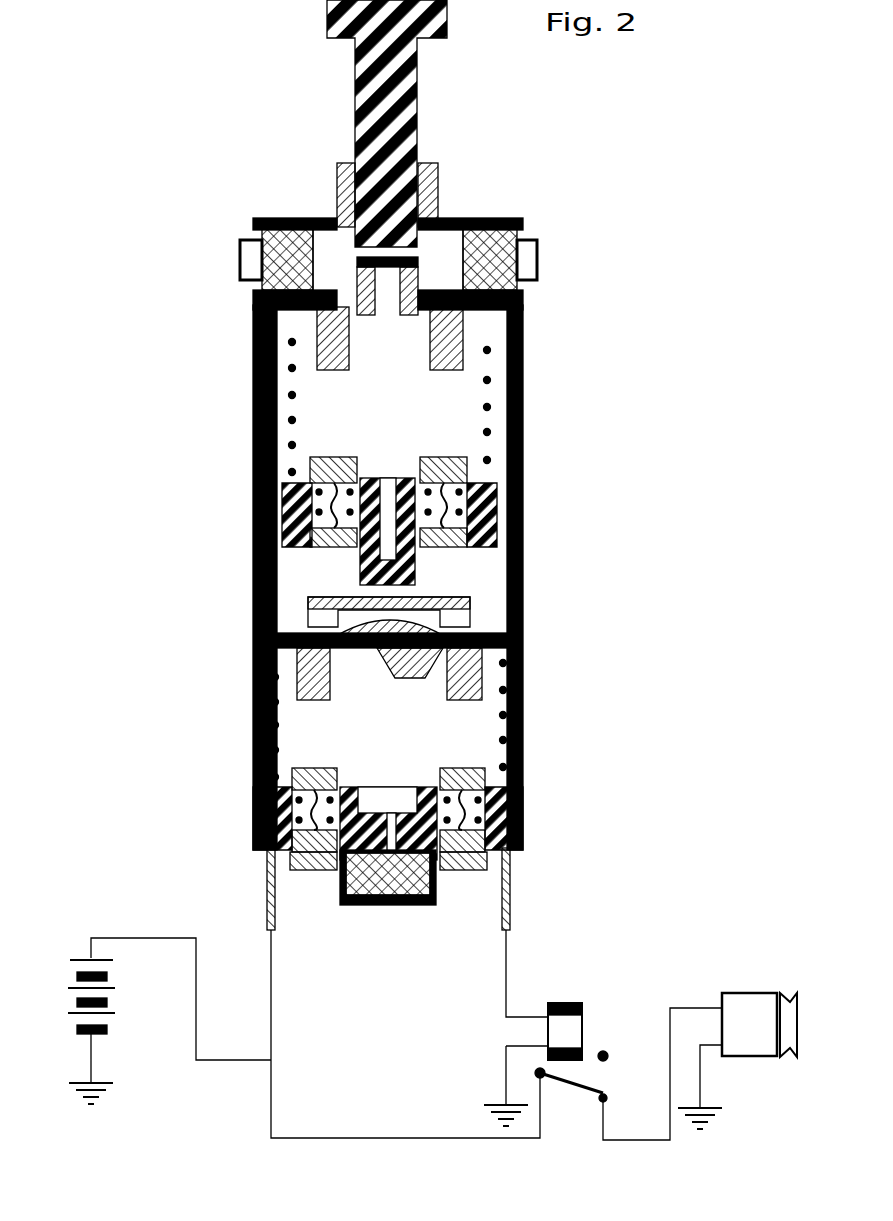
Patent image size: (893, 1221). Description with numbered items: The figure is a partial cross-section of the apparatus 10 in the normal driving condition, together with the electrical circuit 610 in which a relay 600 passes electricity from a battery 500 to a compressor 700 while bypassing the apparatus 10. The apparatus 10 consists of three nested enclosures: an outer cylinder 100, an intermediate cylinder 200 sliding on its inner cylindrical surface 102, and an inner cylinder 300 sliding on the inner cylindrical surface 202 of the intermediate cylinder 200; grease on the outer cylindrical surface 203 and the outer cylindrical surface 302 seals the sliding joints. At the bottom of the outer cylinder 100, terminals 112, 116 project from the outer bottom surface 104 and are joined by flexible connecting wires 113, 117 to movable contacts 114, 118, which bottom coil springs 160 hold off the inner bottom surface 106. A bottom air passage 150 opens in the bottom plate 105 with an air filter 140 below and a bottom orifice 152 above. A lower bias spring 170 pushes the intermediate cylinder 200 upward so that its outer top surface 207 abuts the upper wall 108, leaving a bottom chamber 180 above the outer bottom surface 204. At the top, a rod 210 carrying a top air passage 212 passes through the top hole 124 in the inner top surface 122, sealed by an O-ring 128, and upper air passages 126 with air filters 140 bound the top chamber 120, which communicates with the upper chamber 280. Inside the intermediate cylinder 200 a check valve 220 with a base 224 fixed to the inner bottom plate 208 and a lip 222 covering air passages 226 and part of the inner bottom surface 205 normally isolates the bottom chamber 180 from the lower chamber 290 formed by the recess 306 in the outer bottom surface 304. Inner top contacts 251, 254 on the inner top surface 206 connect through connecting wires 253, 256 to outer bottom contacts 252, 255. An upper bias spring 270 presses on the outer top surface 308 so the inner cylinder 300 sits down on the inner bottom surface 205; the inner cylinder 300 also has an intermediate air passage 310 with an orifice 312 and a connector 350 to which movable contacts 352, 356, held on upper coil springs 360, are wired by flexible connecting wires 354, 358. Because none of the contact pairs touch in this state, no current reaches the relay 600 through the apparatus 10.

The apparatus 10 is at (555, 270).
The outer cylinder 100 is at (250, 404).
The inner cylindrical surface 102 is at (253, 688).
The outer bottom surface 104 is at (312, 871).
The bottom plate 105 is at (505, 855).
The inner bottom surface 106 is at (478, 871).
The upper wall 108 is at (253, 306).
The terminal 112 is at (512, 913).
The flexible connecting wire 113 is at (518, 796).
The movable contact 114 is at (522, 753).
The terminal 116 is at (267, 923).
The flexible connecting wire 117 is at (282, 868).
The movable contact 118 is at (262, 778).
The top chamber 120 is at (332, 240).
The inner top surface 122 is at (440, 216).
The top hole 124 is at (425, 219).
The upper air passages 126 is at (248, 264).
The O-ring 128 is at (428, 192).
The air filter 140 is at (282, 236).
The bottom air passage 150 is at (410, 906).
The bottom orifice 152 is at (366, 905).
The bottom coil spring 160 is at (263, 832).
The lower bias spring 170 is at (262, 722).
The bottom chamber 180 is at (522, 725).
The intermediate cylinder 200 is at (520, 393).
The inner cylindrical surface 202 is at (522, 414).
The outer cylindrical surface 203 is at (483, 444).
The outer bottom surface 204 is at (522, 667).
The inner bottom surface 205 is at (336, 680).
The inner top surface 206 is at (520, 301).
The outer top surface 207 is at (430, 356).
The inner bottom plate 208 is at (450, 700).
The rod 210 is at (412, 126).
The top air passage 212 is at (388, 285).
The check valve 220 is at (375, 670).
The lip 222 is at (253, 640).
The base 224 is at (392, 676).
The air passages 226 is at (425, 661).
The inner top contact 251 is at (520, 368).
The outer bottom contact 252 is at (469, 690).
The connecting wire 253 is at (520, 542).
The inner top contact 254 is at (332, 366).
The outer bottom contact 255 is at (311, 690).
The connecting wire 256 is at (255, 381).
The upper bias spring 270 is at (253, 441).
The upper chamber 280 is at (253, 348).
The lower chamber 290 is at (520, 629).
The inner cylinder 300 is at (330, 516).
The outer cylindrical surface 302 is at (287, 598).
The outer bottom surface 304 is at (520, 640).
The recess 306 is at (520, 623).
The outer top surface 308 is at (396, 480).
The intermediate air passage 310 is at (520, 601).
The orifice 312 is at (382, 486).
The connector 350 is at (374, 496).
The movable contact 352 is at (443, 486).
The flexible connecting wire 354 is at (520, 478).
The movable contact 356 is at (328, 461).
The flexible connecting wire 358 is at (253, 523).
The upper coil spring 360 is at (253, 491).
The battery 500 is at (122, 1006).
The relay 600 is at (583, 1025).
The circuit 610 is at (580, 1108).
The compressor 700 is at (741, 998).